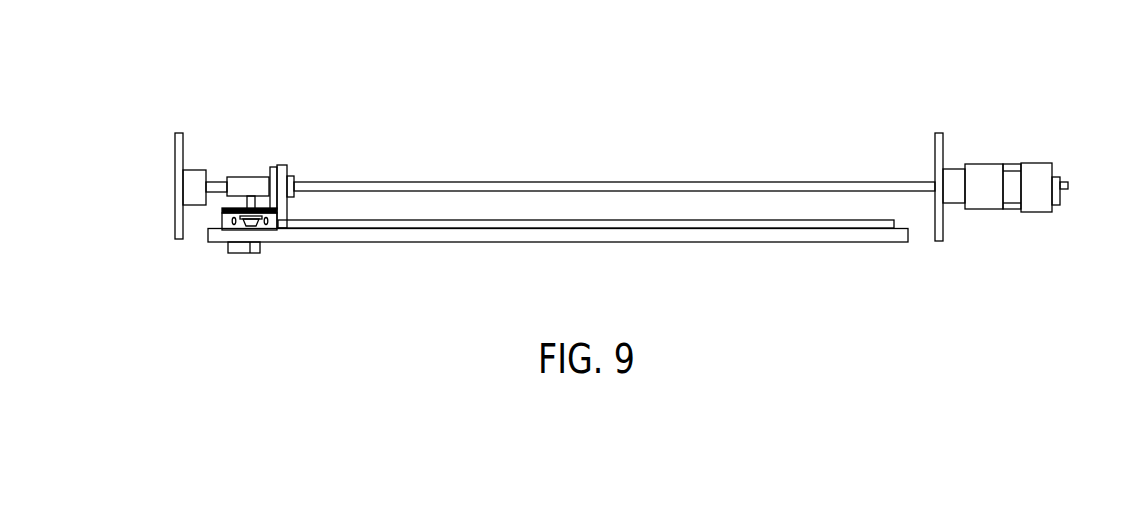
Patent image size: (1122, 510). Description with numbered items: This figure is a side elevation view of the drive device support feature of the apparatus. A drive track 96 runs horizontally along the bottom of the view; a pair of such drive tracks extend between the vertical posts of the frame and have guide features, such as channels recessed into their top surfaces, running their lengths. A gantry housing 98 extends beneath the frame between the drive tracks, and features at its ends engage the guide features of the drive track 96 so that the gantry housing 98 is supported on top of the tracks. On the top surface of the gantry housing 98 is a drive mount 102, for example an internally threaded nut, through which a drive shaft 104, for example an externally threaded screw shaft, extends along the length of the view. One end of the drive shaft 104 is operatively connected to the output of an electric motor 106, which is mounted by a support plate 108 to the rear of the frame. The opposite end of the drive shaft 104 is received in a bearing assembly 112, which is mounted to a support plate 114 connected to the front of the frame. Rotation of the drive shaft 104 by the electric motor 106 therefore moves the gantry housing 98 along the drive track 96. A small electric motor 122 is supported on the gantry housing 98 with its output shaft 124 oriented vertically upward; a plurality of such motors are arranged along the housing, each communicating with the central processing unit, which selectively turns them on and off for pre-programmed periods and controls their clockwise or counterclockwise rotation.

The drive track 96 is at (773, 235).
The gantry housing 98 is at (223, 215).
The drive mount 102 is at (273, 165).
The drive shaft 104 is at (530, 182).
The electric motor 106 is at (987, 177).
The support plate 108 is at (940, 132).
The bearing assembly 112 is at (193, 168).
The support plate 114 is at (175, 153).
The electric motor 122 is at (238, 255).
The output shaft 124 is at (247, 197).